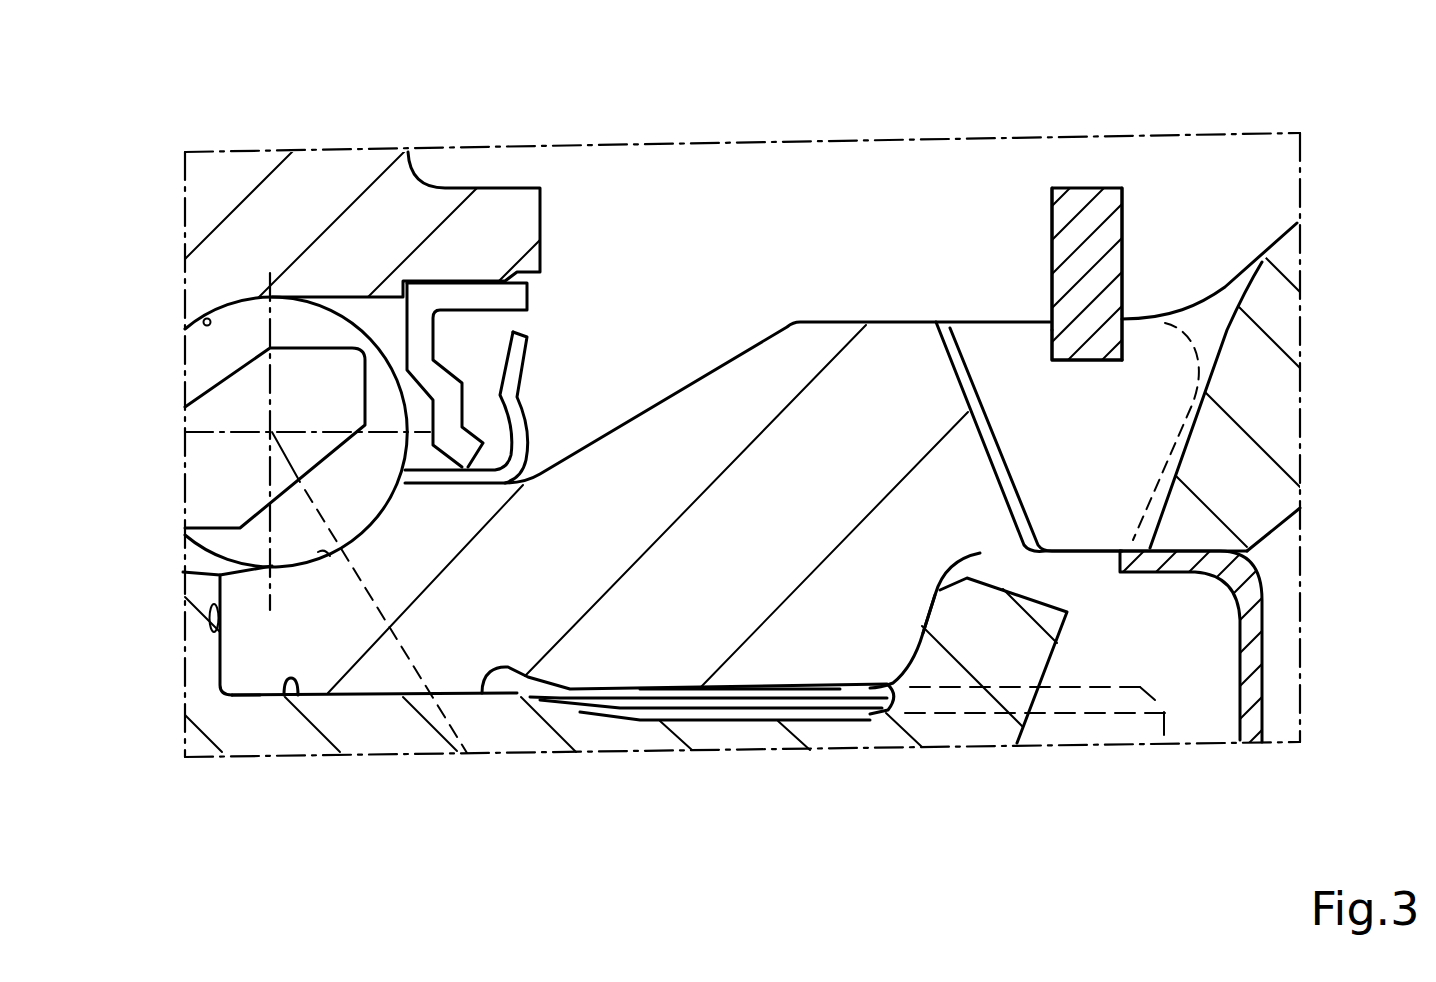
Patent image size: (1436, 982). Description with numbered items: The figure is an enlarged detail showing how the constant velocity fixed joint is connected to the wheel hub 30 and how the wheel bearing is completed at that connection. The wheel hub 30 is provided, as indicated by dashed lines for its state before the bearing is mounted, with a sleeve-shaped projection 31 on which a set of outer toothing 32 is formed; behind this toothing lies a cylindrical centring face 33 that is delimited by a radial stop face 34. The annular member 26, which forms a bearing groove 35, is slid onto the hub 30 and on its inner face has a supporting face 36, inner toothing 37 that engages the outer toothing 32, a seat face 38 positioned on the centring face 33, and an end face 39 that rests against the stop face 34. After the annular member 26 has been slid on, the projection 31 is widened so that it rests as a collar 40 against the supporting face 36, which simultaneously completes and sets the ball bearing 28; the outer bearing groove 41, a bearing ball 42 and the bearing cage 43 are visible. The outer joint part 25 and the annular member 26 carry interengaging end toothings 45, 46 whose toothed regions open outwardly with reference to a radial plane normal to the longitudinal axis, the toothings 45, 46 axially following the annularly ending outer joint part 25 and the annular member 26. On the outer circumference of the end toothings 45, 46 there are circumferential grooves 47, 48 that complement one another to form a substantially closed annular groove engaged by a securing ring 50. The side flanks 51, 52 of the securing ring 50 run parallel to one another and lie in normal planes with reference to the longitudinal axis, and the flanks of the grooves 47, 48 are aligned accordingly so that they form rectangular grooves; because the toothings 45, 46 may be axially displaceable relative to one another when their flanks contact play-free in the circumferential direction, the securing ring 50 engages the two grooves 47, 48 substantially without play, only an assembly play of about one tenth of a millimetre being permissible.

The outer joint part 25 is at (1263, 292).
The annular member 26 is at (768, 363).
The ball bearing 28 is at (315, 188).
The wheel hub 30 is at (463, 687).
The sleeve-shaped projection 31 is at (1103, 723).
The outer toothing 32 is at (600, 712).
The cylindrical centring face 33 is at (291, 696).
The radial stop face 34 is at (224, 698).
The bearing groove 35 is at (331, 556).
The supporting face 36 is at (927, 627).
The inner toothing 37 is at (840, 685).
The seat face 38 is at (377, 698).
The end face 39 is at (190, 597).
The collar 40 is at (997, 650).
The outer bearing groove 41 is at (206, 318).
The bearing ball 42 is at (240, 330).
The bearing cage 43 is at (258, 362).
The end toothing 45 is at (1217, 313).
The end toothing 46 is at (953, 330).
The circumferential groove 47 is at (1123, 323).
The circumferential groove 48 is at (1053, 320).
The securing ring 50 is at (1083, 222).
The side flank 51 is at (1125, 232).
The side flank 52 is at (1053, 222).